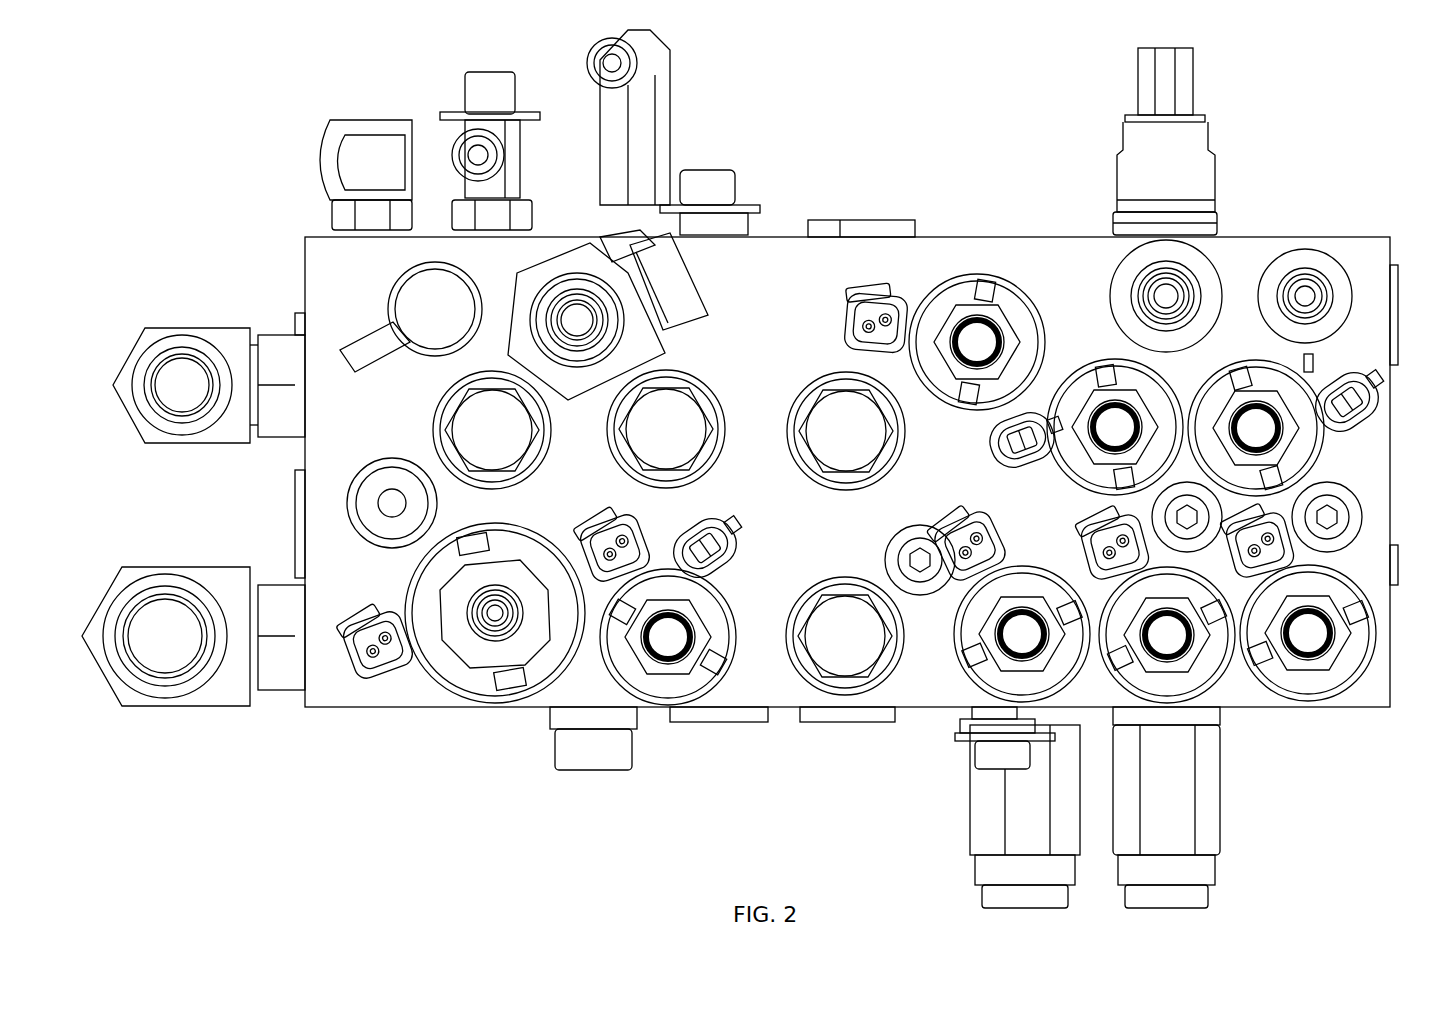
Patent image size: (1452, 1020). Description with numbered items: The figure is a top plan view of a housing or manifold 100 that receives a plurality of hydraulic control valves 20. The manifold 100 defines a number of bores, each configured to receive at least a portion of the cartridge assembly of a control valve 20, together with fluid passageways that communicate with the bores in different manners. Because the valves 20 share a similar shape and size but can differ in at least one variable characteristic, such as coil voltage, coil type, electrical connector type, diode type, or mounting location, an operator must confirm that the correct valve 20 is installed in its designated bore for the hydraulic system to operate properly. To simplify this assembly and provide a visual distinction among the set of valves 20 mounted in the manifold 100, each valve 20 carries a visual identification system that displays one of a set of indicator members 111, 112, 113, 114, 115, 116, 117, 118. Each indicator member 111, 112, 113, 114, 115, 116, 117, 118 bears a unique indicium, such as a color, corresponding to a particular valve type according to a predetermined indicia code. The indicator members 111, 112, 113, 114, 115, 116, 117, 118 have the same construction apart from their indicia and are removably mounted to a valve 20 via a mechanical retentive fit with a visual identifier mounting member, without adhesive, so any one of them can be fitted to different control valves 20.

The housing or manifold 100 is at (975, 245).
The control valve 20 is at (1082, 380).
The indicator member 111 is at (425, 685).
The indicator member 112 is at (573, 560).
The indicator member 113 is at (905, 385).
The indicator member 114 is at (985, 540).
The indicator member 115 is at (1062, 495).
The indicator member 116 is at (1085, 600).
The indicator member 117 is at (1340, 605).
The indicator member 118 is at (1313, 362).